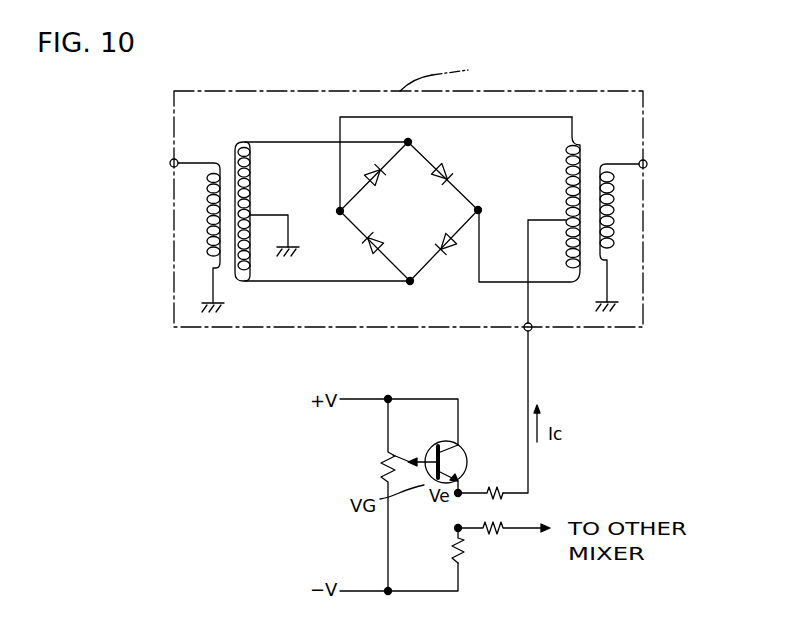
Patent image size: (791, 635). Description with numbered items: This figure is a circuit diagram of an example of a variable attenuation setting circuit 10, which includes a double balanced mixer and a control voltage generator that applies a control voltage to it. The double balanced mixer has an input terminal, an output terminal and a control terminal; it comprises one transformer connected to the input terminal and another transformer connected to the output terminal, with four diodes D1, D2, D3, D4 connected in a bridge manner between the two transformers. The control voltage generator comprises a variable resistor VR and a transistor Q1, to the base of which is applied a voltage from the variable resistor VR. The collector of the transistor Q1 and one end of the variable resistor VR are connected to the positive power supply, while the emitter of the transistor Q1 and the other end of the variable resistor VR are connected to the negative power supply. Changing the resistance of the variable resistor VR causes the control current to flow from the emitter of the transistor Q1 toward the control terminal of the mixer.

The variable attenuation setting circuit 10 is at (472, 361).
The diode D1 is at (383, 174).
The diode D2 is at (378, 234).
The diode D3 is at (439, 240).
The diode D4 is at (439, 183).
The transistor Q1 is at (458, 446).
The variable resistor VR is at (383, 454).